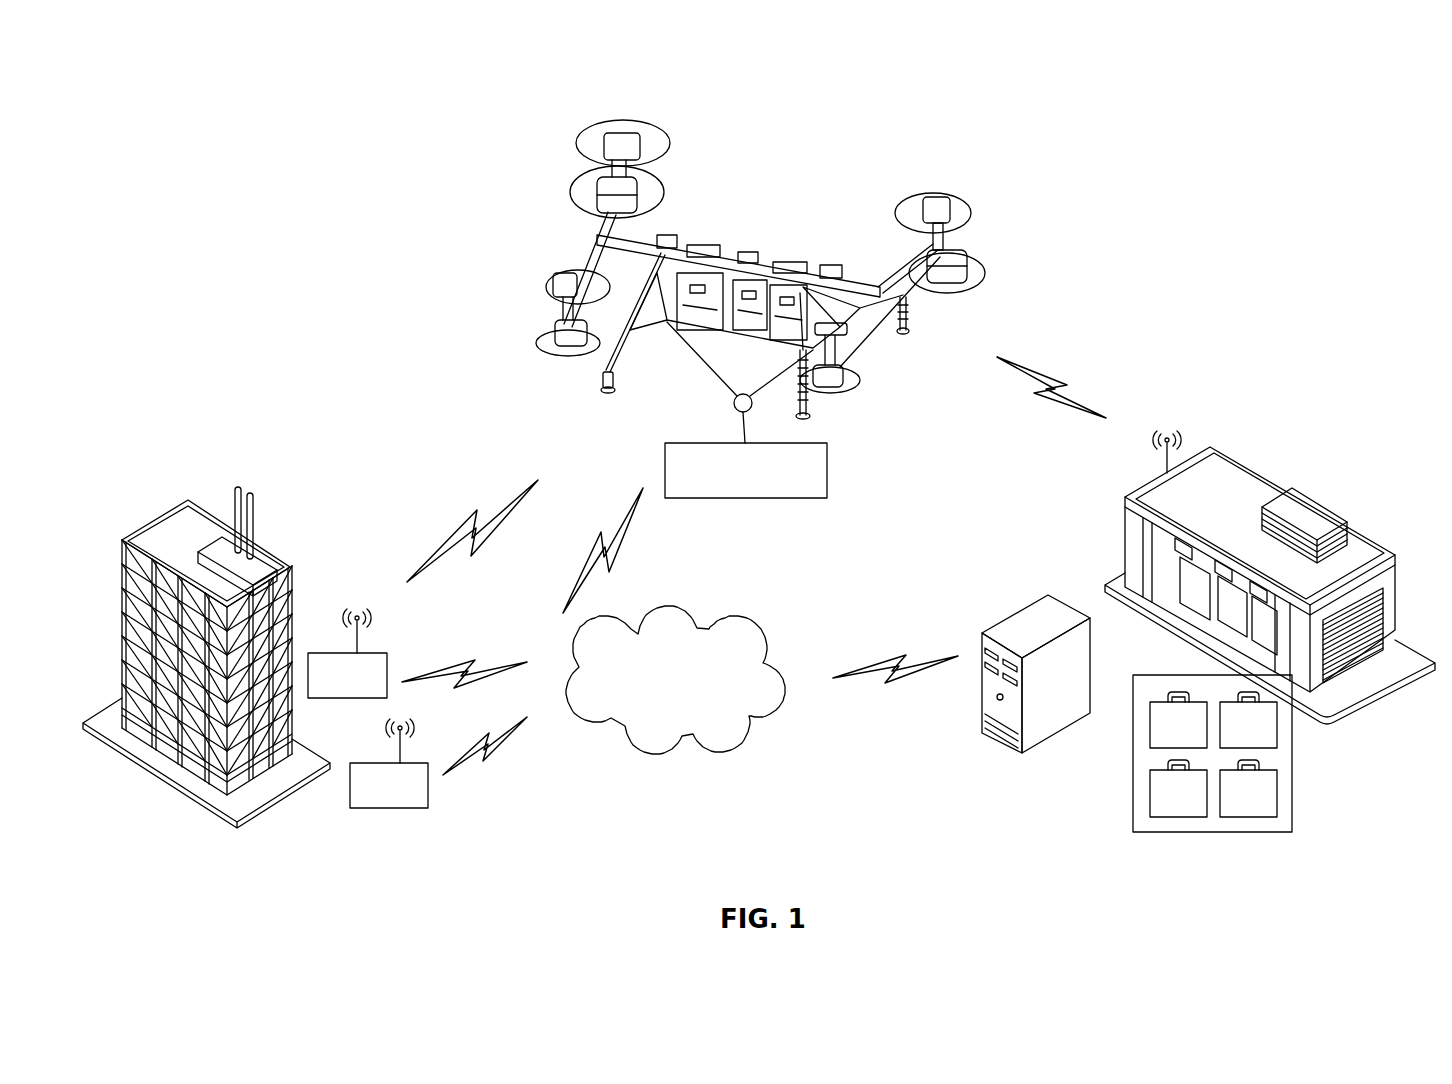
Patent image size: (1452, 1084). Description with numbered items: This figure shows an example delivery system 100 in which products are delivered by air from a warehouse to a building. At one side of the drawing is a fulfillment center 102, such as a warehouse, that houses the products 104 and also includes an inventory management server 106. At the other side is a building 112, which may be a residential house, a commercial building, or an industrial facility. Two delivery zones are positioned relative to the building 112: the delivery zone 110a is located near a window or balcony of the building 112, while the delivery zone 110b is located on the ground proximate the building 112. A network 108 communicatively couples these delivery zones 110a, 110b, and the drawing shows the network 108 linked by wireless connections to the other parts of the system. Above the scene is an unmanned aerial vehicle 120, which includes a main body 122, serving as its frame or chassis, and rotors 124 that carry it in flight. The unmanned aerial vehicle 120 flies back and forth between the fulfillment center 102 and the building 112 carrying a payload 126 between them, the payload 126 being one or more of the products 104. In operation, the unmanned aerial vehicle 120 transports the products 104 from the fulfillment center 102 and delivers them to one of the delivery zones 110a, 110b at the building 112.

The delivery system 100 is at (162, 118).
The fulfillment center 102 is at (1228, 482).
The products 104 is at (1277, 795).
The inventory management server 106 is at (1053, 712).
The network 108 is at (676, 607).
The delivery zone 110a is at (381, 693).
The delivery zone 110b is at (423, 803).
The building 112 is at (283, 560).
The unmanned aerial vehicle 120 is at (815, 148).
The main body 122 is at (735, 250).
The rotors 124 is at (620, 135).
The payload 126 is at (827, 470).